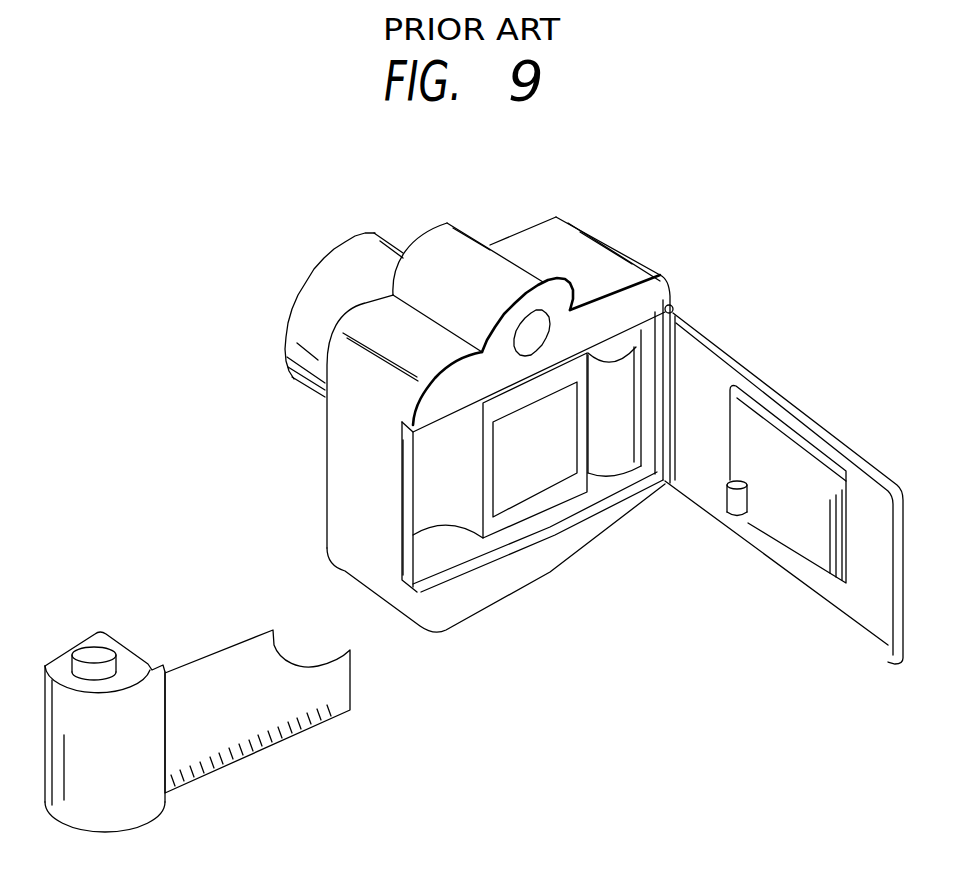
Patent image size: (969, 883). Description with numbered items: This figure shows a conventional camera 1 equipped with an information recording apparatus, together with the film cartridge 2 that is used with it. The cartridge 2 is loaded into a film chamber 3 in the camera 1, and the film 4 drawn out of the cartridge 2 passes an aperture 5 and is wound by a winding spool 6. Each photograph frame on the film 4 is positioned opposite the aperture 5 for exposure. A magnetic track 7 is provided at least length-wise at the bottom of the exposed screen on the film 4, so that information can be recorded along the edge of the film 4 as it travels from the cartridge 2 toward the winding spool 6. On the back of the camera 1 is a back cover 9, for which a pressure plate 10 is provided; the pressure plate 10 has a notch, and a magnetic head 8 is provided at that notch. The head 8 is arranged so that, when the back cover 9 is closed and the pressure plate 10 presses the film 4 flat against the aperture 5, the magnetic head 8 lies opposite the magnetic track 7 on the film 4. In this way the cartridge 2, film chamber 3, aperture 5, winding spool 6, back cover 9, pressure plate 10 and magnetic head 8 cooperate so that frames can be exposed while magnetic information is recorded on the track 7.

The camera 1 is at (600, 247).
The film cartridge 2 is at (133, 666).
The film chamber 3 is at (432, 482).
The film 4 is at (326, 708).
The aperture 5 is at (528, 480).
The winding spool 6 is at (619, 462).
The magnetic track 7 is at (225, 760).
The magnetic head 8 is at (733, 516).
The back cover 9 is at (710, 355).
The pressure plate 10 is at (808, 470).